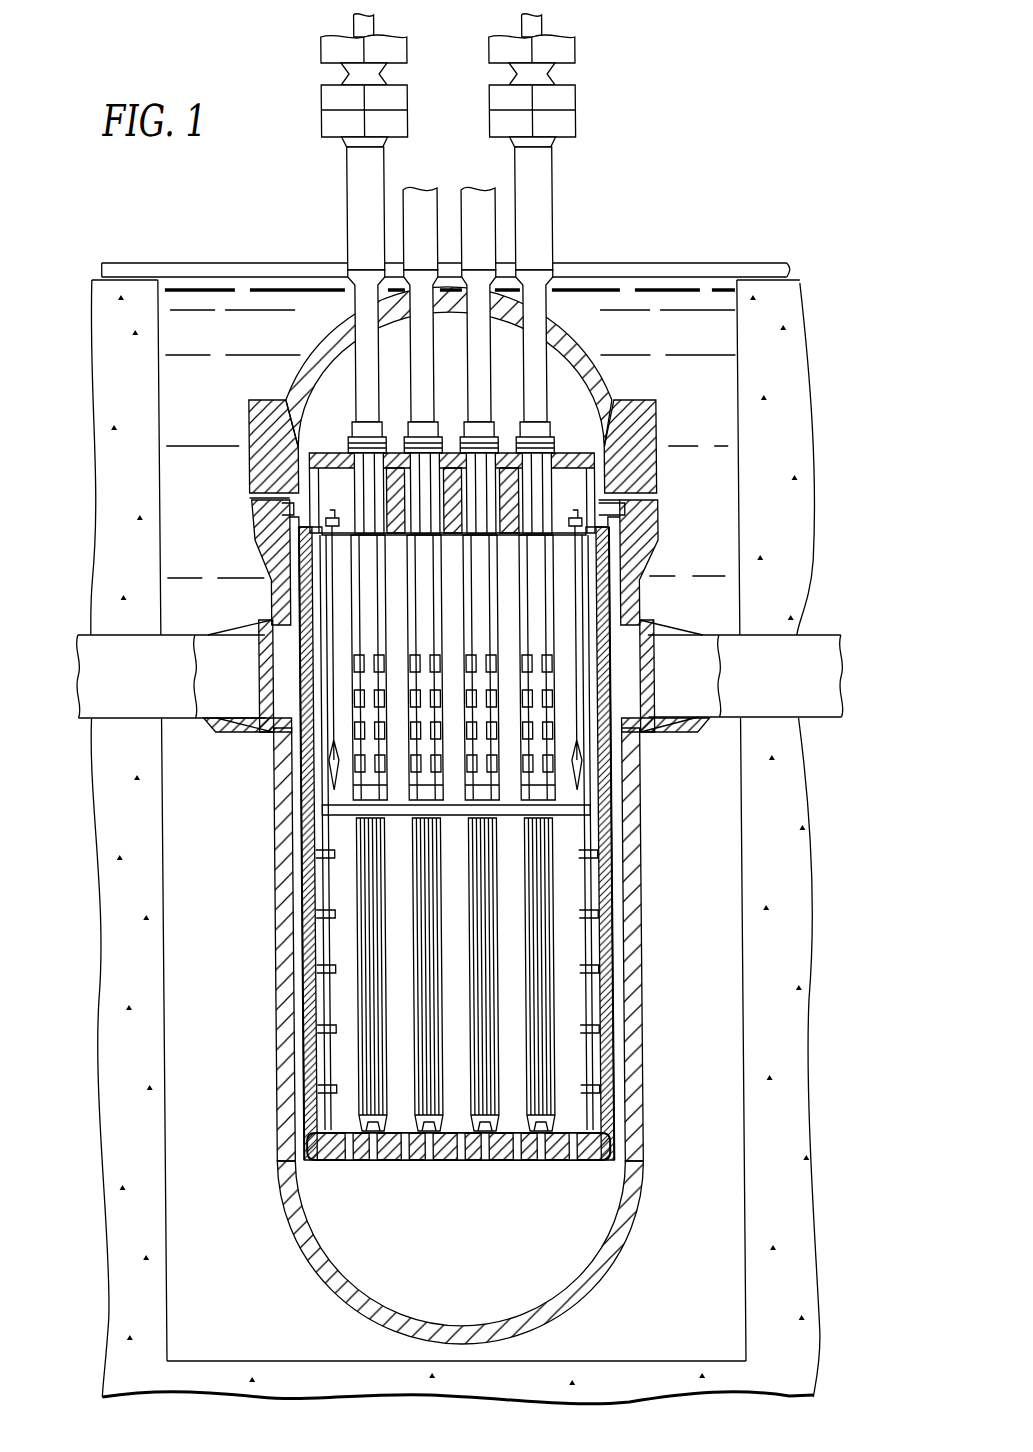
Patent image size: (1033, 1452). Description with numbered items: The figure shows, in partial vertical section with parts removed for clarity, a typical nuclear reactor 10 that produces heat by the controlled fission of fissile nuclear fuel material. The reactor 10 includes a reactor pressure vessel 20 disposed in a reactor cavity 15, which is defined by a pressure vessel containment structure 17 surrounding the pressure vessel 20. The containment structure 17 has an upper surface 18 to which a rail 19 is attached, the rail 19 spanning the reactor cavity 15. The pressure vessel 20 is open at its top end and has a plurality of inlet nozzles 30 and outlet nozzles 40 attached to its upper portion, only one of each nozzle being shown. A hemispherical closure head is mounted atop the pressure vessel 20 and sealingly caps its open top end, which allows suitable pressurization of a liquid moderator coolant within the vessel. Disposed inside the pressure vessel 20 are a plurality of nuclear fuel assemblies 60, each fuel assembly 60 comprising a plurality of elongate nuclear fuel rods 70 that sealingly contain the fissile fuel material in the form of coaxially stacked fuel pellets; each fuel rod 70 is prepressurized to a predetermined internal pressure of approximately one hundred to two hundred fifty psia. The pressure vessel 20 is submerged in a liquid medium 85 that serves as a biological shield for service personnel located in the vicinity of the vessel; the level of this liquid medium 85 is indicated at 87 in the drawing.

The nuclear reactor 10 is at (671, 137).
The reactor cavity 15 is at (172, 411).
The pressure vessel containment structure 17 is at (788, 390).
The upper surface 18 is at (92, 278).
The rail 19 is at (228, 270).
The reactor pressure vessel 20 is at (653, 523).
The inlet nozzle 30 is at (246, 626).
The outlet nozzle 40 is at (644, 631).
The nuclear fuel assembly 60 is at (458, 1117).
The nuclear fuel rod 70 is at (543, 953).
The liquid medium 85 is at (678, 293).
The water level 87 is at (617, 287).